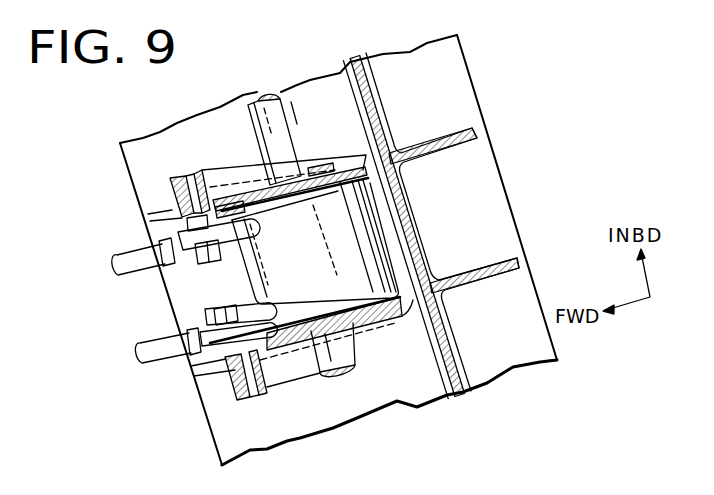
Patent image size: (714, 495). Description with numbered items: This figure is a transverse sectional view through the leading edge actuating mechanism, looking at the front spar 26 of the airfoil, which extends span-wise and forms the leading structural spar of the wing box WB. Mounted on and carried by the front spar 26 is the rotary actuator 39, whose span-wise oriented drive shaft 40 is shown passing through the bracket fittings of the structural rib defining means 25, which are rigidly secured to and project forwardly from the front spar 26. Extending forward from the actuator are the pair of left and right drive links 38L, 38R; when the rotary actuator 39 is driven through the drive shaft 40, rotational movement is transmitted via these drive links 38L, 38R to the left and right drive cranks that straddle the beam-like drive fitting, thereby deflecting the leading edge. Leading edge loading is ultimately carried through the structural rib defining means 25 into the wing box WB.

The structural rib defining means 25 is at (170, 191).
The front spar 26 is at (418, 248).
The right drive link 38R is at (137, 252).
The left drive link 38L is at (165, 356).
The rotary actuator 39 is at (331, 248).
The drive shaft 40 is at (256, 104).
The wing box WB is at (500, 168).